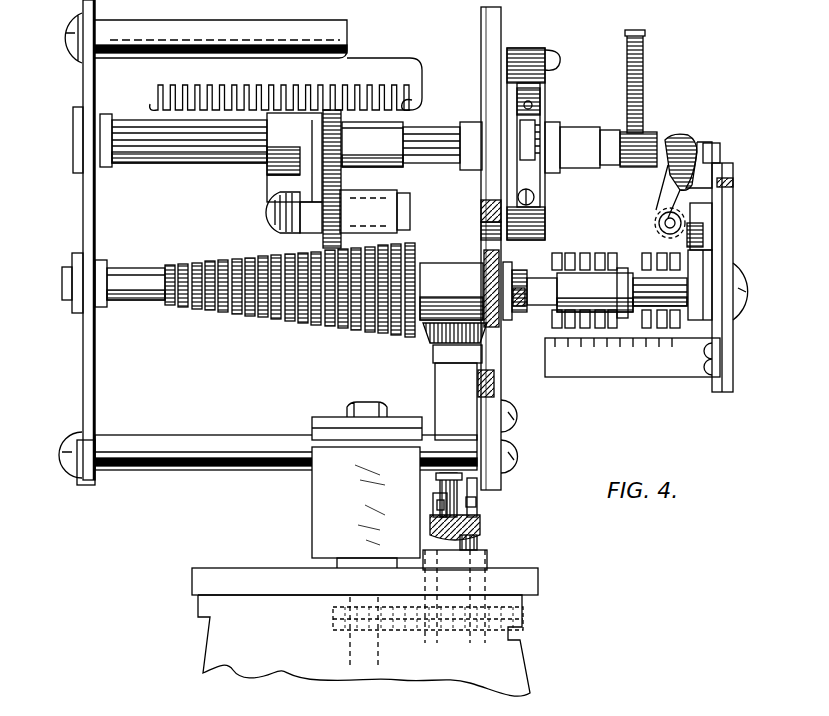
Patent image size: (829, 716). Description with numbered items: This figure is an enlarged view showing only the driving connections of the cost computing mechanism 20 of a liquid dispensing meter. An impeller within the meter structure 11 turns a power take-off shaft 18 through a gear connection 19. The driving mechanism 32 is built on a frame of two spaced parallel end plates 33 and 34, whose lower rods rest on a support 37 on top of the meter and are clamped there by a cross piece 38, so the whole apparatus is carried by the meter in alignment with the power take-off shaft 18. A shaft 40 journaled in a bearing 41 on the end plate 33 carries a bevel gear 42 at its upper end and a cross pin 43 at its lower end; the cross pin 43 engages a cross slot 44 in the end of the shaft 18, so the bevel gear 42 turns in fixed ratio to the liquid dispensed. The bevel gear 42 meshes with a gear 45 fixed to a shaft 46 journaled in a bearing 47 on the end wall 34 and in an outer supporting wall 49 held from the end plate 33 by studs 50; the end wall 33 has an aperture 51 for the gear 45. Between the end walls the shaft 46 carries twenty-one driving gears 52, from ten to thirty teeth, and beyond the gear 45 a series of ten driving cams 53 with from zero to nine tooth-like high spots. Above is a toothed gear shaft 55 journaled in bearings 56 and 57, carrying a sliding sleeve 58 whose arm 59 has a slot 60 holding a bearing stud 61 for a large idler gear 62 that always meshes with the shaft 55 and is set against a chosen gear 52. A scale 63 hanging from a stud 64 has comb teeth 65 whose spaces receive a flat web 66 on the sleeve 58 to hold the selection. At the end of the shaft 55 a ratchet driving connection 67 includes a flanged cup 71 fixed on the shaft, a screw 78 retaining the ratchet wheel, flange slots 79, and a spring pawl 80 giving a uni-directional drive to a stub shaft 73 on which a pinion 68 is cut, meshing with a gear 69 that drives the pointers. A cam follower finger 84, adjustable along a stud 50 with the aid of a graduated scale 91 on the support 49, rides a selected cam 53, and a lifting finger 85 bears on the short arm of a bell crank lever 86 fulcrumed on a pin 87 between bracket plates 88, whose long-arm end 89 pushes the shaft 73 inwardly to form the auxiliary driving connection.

The meter structure 11 is at (530, 675).
The power take-off shaft 18 is at (485, 538).
The gear connection 19 is at (428, 628).
The cost computing mechanism 20 is at (185, 366).
The driving mechanism 32 is at (200, 175).
The end plate 33 is at (502, 22).
The end plate 34 is at (88, 352).
The support 37 is at (325, 490).
The cross piece 38 is at (320, 408).
The shaft 40 is at (472, 495).
The bearing 41 is at (447, 393).
The bevel gear 42 is at (433, 347).
The cross pin 43 is at (478, 504).
The cross slot 44 is at (432, 498).
The gear 45 is at (484, 255).
The shaft 46 is at (468, 286).
The bearing 47 is at (118, 266).
The outer supporting wall 49 is at (725, 230).
The studs 50 is at (536, 286).
The aperture 51 is at (489, 350).
The driving gears 52 is at (280, 331).
The driving cams 53 is at (597, 246).
The gear shaft 55 is at (435, 125).
The bearing 56 is at (470, 120).
The bearing 57 is at (72, 150).
The sleeve 58 is at (386, 132).
The arm 59 is at (305, 182).
The slot 60 is at (298, 230).
The bearing stud 61 is at (405, 212).
The idler gear 62 is at (335, 212).
The scale 63 is at (405, 36).
The stud 64 is at (222, 32).
The comb teeth 65 is at (150, 104).
The web 66 is at (318, 127).
The ratchet driving connection 67 is at (568, 45).
The pinion 68 is at (648, 130).
The gear 69 is at (645, 55).
The flanged disk or cup 71 is at (547, 88).
The shaft 73 is at (588, 126).
The screw 78 is at (557, 62).
The slot 79 is at (532, 106).
The spring pawl 80 is at (532, 190).
The cam follower finger 84 is at (622, 250).
The lifting finger 85 is at (700, 258).
The bell crank lever 86 is at (700, 142).
The pin 87 is at (665, 221).
The bracket plates 88 is at (720, 150).
The outer end of long arm 89 is at (675, 140).
The scale 91 is at (636, 372).